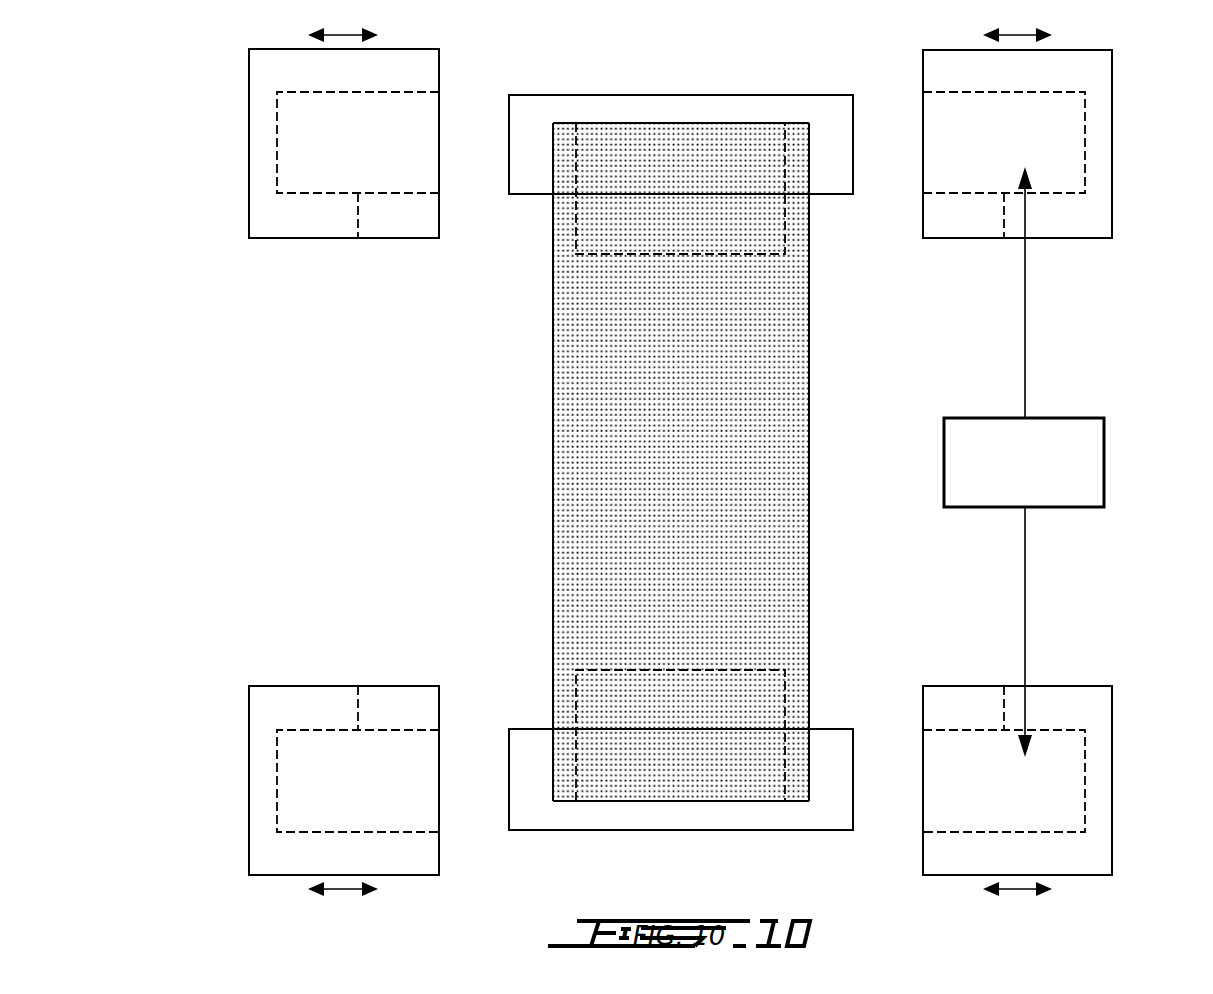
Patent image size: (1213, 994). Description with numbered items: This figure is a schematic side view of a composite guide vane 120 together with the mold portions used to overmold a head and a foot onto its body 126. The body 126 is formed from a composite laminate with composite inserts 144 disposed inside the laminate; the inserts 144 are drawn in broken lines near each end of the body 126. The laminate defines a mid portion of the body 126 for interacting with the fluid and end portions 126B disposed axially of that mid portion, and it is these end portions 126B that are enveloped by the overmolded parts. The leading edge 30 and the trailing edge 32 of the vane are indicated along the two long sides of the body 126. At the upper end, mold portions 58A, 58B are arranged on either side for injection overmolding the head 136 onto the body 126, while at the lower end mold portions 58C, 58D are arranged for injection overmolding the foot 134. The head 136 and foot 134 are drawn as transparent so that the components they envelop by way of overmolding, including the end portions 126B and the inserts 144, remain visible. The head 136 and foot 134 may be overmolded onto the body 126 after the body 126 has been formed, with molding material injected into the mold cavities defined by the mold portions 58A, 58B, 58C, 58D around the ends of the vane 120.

The vane 120 is at (274, 352).
The mold portion 58A is at (262, 134).
The mold portion 58B is at (1095, 158).
The mold portion 58C is at (262, 769).
The mold portion 58D is at (1095, 748).
The head 136 is at (701, 111).
The foot 134 is at (700, 812).
The body 126 is at (682, 462).
The end portion 126B is at (567, 165).
The insert 144 is at (785, 232).
The leading edge 30 is at (553, 509).
The trailing edge 32 is at (809, 532).